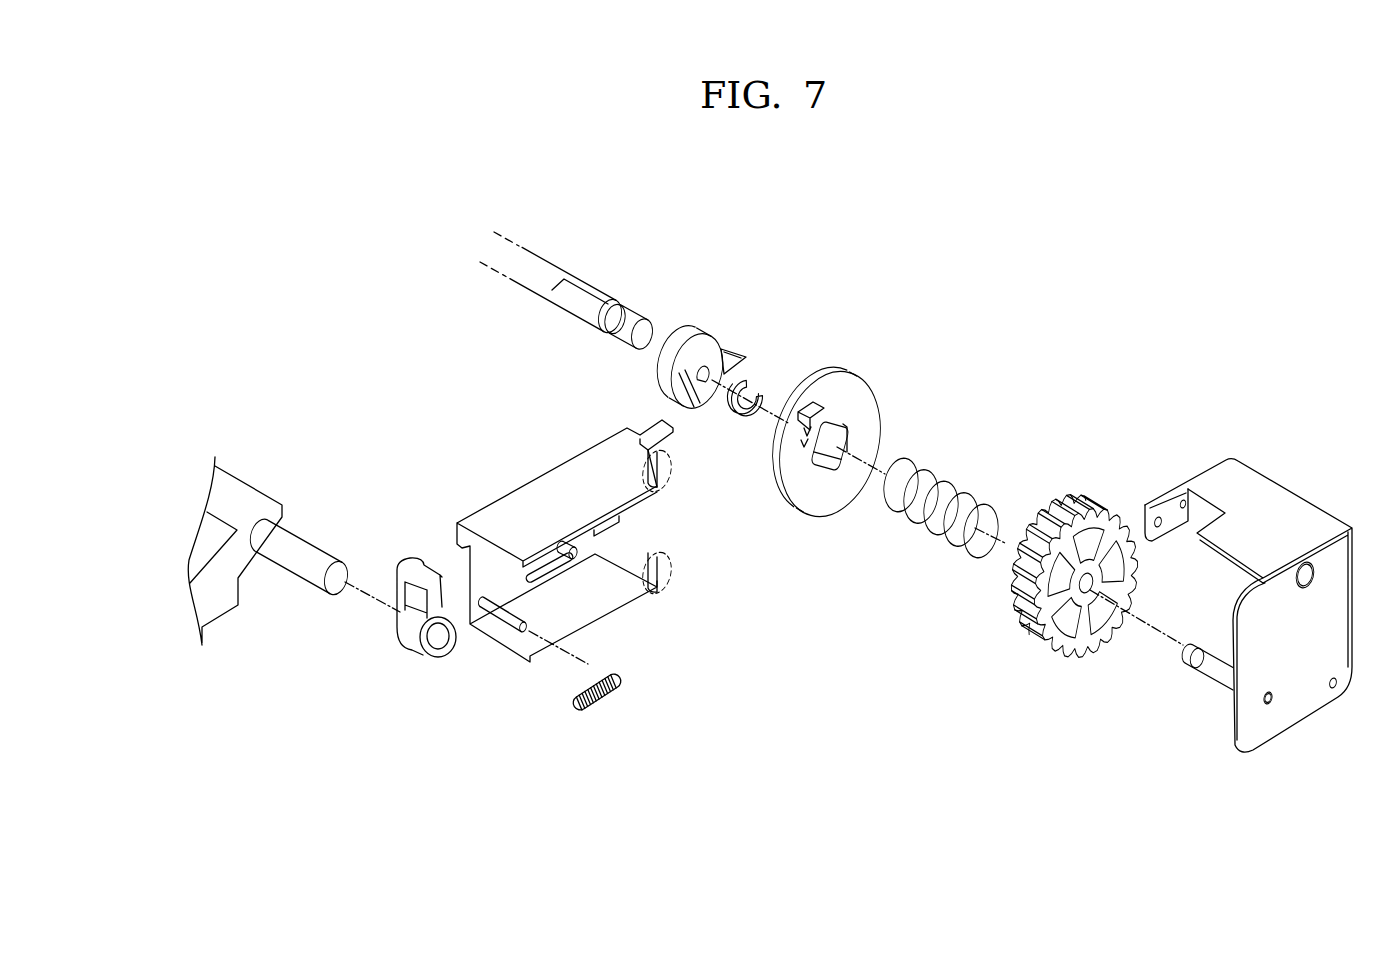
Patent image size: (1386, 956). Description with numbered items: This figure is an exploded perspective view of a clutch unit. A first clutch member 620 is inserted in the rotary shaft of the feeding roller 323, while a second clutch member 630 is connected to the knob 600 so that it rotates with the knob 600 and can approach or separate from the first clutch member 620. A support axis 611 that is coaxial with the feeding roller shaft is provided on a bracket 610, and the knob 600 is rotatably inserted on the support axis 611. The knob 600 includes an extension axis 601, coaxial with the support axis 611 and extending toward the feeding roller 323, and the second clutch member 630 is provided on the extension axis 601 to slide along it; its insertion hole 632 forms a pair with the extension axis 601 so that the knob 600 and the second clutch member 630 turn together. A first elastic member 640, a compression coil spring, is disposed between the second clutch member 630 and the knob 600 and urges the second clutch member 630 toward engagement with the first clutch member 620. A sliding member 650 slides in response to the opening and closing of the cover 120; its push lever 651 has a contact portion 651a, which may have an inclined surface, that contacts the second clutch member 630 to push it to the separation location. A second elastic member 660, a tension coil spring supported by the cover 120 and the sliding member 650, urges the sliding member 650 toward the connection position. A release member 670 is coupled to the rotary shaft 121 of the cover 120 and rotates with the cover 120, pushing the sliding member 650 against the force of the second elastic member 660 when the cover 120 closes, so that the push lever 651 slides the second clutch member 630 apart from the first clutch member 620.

The cover 120 is at (243, 490).
The rotary shaft 121 is at (308, 553).
The feeding roller 323 is at (557, 272).
The knob 600 is at (1075, 556).
The extension axis 601 is at (1022, 540).
The bracket 610 is at (1248, 627).
The support axis 611 is at (1207, 670).
The first clutch member 620 is at (703, 338).
The second clutch member 630 is at (827, 437).
The insertion hole 632 is at (835, 463).
The first elastic member 640 is at (942, 482).
The sliding member 650 is at (483, 513).
The push lever 651 is at (608, 620).
The contact portion 651a is at (670, 560).
The second elastic member 660 is at (600, 702).
The release member 670 is at (412, 647).